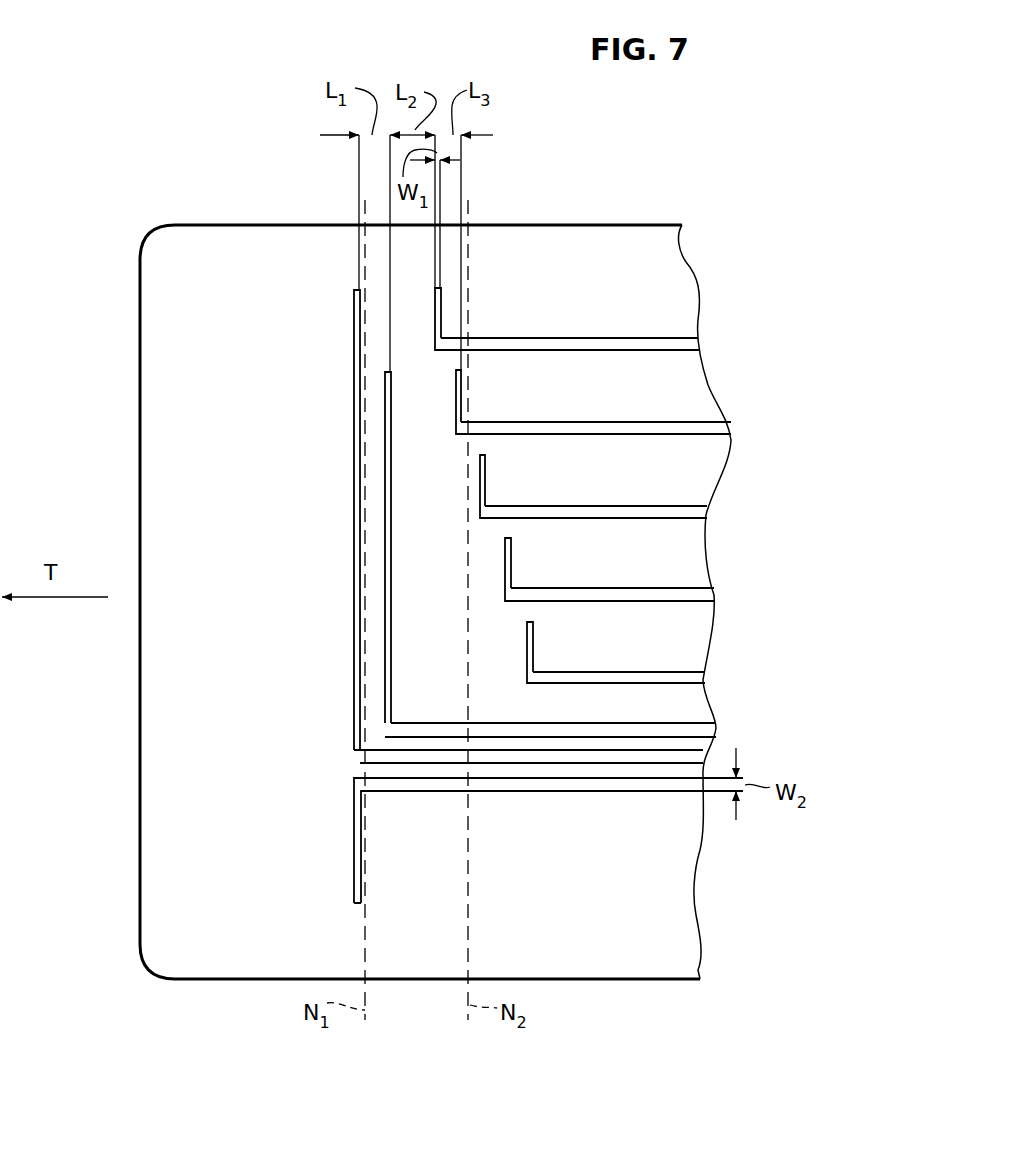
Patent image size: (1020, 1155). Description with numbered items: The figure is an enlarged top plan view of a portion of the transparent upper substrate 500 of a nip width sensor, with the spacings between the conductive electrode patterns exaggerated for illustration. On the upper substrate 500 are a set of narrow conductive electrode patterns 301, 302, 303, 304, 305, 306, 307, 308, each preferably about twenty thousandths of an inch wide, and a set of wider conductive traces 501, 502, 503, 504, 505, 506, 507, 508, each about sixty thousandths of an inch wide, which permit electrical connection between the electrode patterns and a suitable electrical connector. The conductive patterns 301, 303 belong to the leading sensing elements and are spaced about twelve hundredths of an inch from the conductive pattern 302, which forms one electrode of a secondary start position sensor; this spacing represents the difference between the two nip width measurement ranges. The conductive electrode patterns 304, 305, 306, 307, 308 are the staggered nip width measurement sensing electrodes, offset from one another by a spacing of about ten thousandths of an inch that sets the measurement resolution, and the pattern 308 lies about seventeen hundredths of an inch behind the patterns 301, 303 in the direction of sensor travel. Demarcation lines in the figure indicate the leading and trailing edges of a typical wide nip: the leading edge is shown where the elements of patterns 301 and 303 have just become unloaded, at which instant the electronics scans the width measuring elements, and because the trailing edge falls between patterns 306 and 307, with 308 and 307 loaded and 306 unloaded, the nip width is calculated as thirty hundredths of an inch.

The transparent upper substrate 500 is at (158, 320).
The conductive electrode pattern 301 is at (353, 889).
The conductive electrode pattern 302 is at (393, 404).
The conductive electrode pattern 303 is at (352, 308).
The conductive electrode pattern 304 is at (534, 638).
The conductive electrode pattern 305 is at (512, 556).
The conductive electrode pattern 306 is at (486, 474).
The conductive electrode pattern 307 is at (462, 388).
The conductive electrode pattern 308 is at (441, 293).
The conductive trace 501 is at (685, 788).
The conductive trace 502 is at (664, 760).
The conductive trace 503 is at (713, 730).
The conductive trace 504 is at (705, 678).
The conductive trace 505 is at (713, 594).
The conductive trace 506 is at (706, 513).
The conductive trace 507 is at (726, 428).
The conductive trace 508 is at (698, 346).